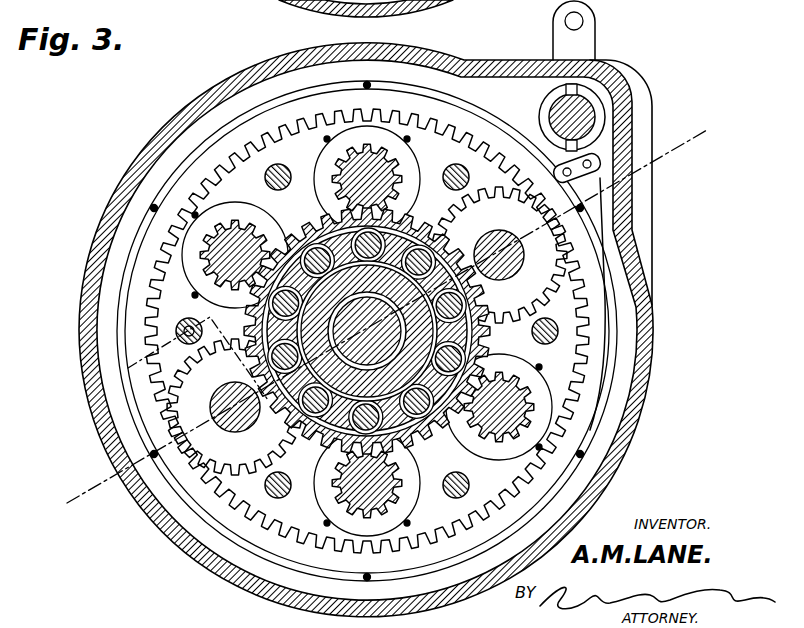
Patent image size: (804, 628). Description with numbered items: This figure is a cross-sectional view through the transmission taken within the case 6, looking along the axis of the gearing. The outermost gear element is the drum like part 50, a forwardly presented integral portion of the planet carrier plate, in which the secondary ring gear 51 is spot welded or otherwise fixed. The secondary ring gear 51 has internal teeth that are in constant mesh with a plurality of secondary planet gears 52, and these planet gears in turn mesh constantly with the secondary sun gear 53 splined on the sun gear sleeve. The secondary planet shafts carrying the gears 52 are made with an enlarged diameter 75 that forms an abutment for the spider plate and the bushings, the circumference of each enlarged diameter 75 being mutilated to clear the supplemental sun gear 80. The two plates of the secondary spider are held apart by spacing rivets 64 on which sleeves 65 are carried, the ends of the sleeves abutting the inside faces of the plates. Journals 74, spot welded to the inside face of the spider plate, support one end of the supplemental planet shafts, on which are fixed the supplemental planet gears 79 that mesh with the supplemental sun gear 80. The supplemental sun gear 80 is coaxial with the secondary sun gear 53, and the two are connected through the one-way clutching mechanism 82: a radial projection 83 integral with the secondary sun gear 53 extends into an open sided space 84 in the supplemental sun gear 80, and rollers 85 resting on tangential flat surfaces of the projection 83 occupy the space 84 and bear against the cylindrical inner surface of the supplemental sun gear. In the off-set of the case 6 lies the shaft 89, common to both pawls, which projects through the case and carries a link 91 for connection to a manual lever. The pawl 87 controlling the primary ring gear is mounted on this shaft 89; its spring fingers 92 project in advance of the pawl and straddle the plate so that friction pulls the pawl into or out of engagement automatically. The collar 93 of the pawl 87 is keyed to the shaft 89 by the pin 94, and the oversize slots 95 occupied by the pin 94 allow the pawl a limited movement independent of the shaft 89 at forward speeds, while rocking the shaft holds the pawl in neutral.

The case 6 is at (695, 156).
The drum like part 50 is at (123, 295).
The secondary ring gear 51 is at (137, 317).
The secondary planet gears 52 is at (453, 186).
The secondary sun gear 53 is at (367, 331).
The spacing rivets 64 is at (180, 335).
The sleeves 65 is at (182, 328).
The journals 74 is at (236, 206).
The enlarged diameter 75 is at (502, 282).
The supplemental planet gears 79 is at (325, 490).
The supplemental sun gear 80 is at (245, 310).
The one-way clutching mechanism 82 is at (247, 352).
The radial projection 83 is at (318, 186).
The open sided space 84 is at (480, 324).
The rollers 85 is at (412, 441).
The pawl 87 is at (601, 213).
The shaft 89 is at (588, 112).
The link 91 is at (590, 40).
The fingers 92 is at (618, 185).
The collar 93 is at (540, 112).
The pin 94 is at (578, 86).
The slots 95 is at (563, 92).